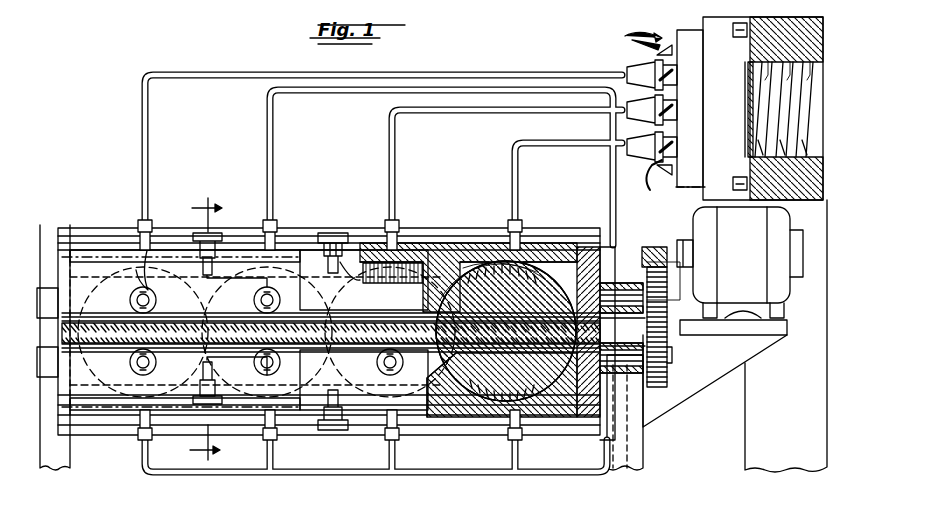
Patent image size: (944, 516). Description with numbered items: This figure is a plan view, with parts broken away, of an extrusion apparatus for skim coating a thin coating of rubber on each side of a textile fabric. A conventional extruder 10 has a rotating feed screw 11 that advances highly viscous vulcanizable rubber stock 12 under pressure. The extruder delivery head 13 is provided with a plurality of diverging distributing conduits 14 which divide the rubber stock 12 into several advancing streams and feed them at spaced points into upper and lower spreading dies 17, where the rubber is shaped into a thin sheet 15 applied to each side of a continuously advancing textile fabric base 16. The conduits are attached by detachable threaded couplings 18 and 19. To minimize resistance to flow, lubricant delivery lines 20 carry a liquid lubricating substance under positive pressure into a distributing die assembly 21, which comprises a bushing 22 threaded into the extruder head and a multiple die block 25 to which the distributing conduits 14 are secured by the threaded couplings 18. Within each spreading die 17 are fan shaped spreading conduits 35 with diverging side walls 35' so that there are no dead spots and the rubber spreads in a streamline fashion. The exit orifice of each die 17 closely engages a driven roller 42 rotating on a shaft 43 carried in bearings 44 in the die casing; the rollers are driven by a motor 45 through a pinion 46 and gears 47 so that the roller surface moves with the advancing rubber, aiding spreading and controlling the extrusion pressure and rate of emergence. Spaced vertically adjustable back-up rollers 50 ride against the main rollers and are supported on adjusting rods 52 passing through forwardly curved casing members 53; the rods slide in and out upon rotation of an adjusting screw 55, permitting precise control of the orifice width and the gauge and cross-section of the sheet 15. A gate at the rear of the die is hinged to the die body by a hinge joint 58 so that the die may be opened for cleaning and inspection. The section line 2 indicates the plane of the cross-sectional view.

The section line 2 is at (196, 321).
The extruder 10 is at (792, 47).
The feed screw 11 is at (774, 121).
The rubber stock 12 is at (750, 158).
The extruder delivery head 13 is at (763, 108).
The distributing conduits 14 is at (456, 110).
The thin sheet or coating 15 is at (485, 330).
The textile fabric base 16 is at (538, 330).
The spreading dies 17 is at (282, 238).
The threaded couplings 18 is at (620, 70).
The threaded couplings 19 is at (142, 232).
The lubricant delivery lines 20 is at (632, 193).
The distributing die assembly 21 is at (630, 37).
The bushing 22 is at (690, 108).
The multiple die block 25 is at (678, 181).
The fan shaped spreading conduits 35 is at (343, 327).
The diverging side walls 35' is at (461, 247).
The driven roller 42 is at (414, 236).
The shaft 43 is at (72, 230).
The bearings 44 is at (64, 245).
The motor 45 is at (750, 262).
The pinion 46 is at (664, 247).
The gears 47 is at (666, 296).
The vertically adjustable back-up rollers 50 is at (310, 250).
The adjusting rods 52 is at (366, 241).
The forwardly curved casing members 53 is at (88, 260).
The adjusting screw 55 is at (130, 230).
The hinge joint 58 is at (238, 228).